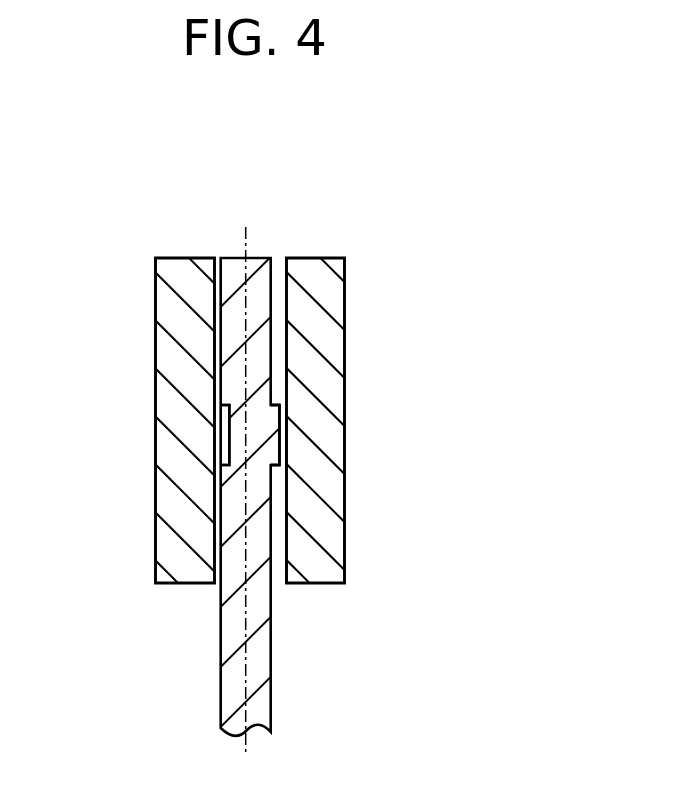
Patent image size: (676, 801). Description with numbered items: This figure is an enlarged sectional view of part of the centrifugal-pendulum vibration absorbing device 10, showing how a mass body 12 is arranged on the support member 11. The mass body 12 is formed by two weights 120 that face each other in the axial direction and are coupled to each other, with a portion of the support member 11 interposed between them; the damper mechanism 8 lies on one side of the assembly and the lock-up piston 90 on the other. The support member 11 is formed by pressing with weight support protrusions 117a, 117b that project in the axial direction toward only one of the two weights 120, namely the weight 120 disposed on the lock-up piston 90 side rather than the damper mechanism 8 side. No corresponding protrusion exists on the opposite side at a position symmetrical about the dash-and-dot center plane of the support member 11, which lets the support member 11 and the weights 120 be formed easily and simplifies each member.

The damper mechanism 8 is at (98, 367).
The lock-up piston 90 is at (426, 367).
The centrifugal-pendulum vibration absorbing device 10 is at (381, 256).
The mass body 12 is at (129, 298).
The weight 120 is at (166, 528).
The support member 11 is at (262, 660).
The weight support protrusion 117a is at (280, 423).
The weight support protrusion 117b is at (379, 435).